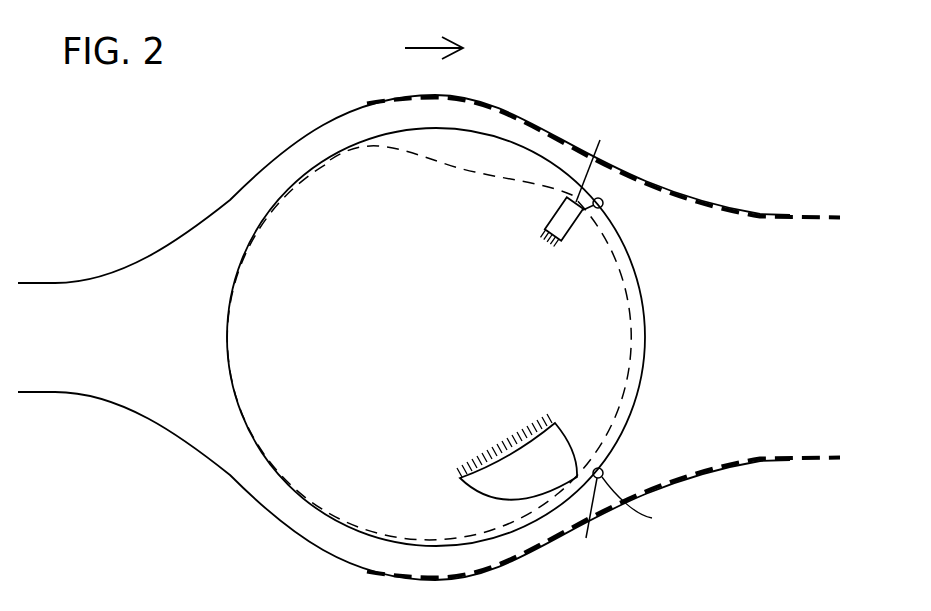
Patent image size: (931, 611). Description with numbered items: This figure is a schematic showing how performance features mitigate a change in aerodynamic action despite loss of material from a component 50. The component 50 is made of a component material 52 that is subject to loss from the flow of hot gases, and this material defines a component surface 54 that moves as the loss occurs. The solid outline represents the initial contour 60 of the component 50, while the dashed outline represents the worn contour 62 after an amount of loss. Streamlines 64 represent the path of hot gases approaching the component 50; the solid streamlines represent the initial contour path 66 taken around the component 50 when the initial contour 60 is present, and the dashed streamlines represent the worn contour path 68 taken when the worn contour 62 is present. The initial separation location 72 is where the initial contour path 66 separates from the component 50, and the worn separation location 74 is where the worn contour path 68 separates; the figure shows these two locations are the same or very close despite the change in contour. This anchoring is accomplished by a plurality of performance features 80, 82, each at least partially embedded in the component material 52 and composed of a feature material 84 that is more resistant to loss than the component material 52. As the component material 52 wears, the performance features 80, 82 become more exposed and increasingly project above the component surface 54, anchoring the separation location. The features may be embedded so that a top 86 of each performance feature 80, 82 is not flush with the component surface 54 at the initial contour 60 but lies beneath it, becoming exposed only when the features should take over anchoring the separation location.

The component 50 is at (440, 337).
The component material 52 is at (440, 337).
The component surface 54 is at (440, 337).
The initial contour 60 is at (648, 337).
The worn contour 62 is at (628, 337).
The streamlines 64 is at (59, 283).
The initial contour path 66 is at (439, 337).
The worn contour path 68 is at (782, 458).
The initial separation location 72 is at (657, 227).
The worn separation location 74 is at (603, 206).
The performance feature 80 is at (517, 221).
The performance feature 82 is at (522, 478).
The feature material 84 is at (550, 228).
The top 86 is at (600, 140).